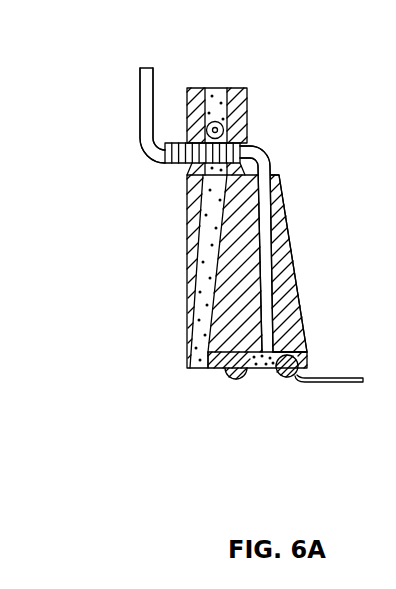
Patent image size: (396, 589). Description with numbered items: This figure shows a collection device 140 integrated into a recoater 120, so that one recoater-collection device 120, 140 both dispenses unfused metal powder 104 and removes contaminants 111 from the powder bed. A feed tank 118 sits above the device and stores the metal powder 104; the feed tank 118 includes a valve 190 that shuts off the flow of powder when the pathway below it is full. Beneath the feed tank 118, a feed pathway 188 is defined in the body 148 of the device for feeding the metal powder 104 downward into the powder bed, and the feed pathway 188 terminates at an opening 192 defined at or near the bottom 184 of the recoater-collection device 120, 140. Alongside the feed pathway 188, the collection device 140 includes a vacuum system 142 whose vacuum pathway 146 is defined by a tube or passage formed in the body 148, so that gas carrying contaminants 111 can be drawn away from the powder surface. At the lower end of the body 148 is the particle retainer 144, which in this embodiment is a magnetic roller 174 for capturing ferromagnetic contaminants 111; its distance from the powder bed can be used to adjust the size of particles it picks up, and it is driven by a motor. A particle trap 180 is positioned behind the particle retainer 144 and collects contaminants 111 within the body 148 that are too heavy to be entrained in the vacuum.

The recoater 120 is at (153, 46).
The collection device 140 is at (96, 87).
The feed tank 118 is at (245, 89).
The valve 190 is at (223, 128).
The bottom 184 is at (187, 371).
The feed pathway 188 is at (192, 266).
The metal powder 104 is at (193, 313).
The vacuum system 142 is at (263, 146).
The vacuum pathway 146 is at (263, 188).
The body 148 is at (288, 306).
The contaminants 111 is at (270, 343).
The opening 192 is at (188, 372).
The particle trap 180 is at (258, 372).
The magnetic roller 174 is at (288, 380).
The particle retainer 144 is at (278, 375).